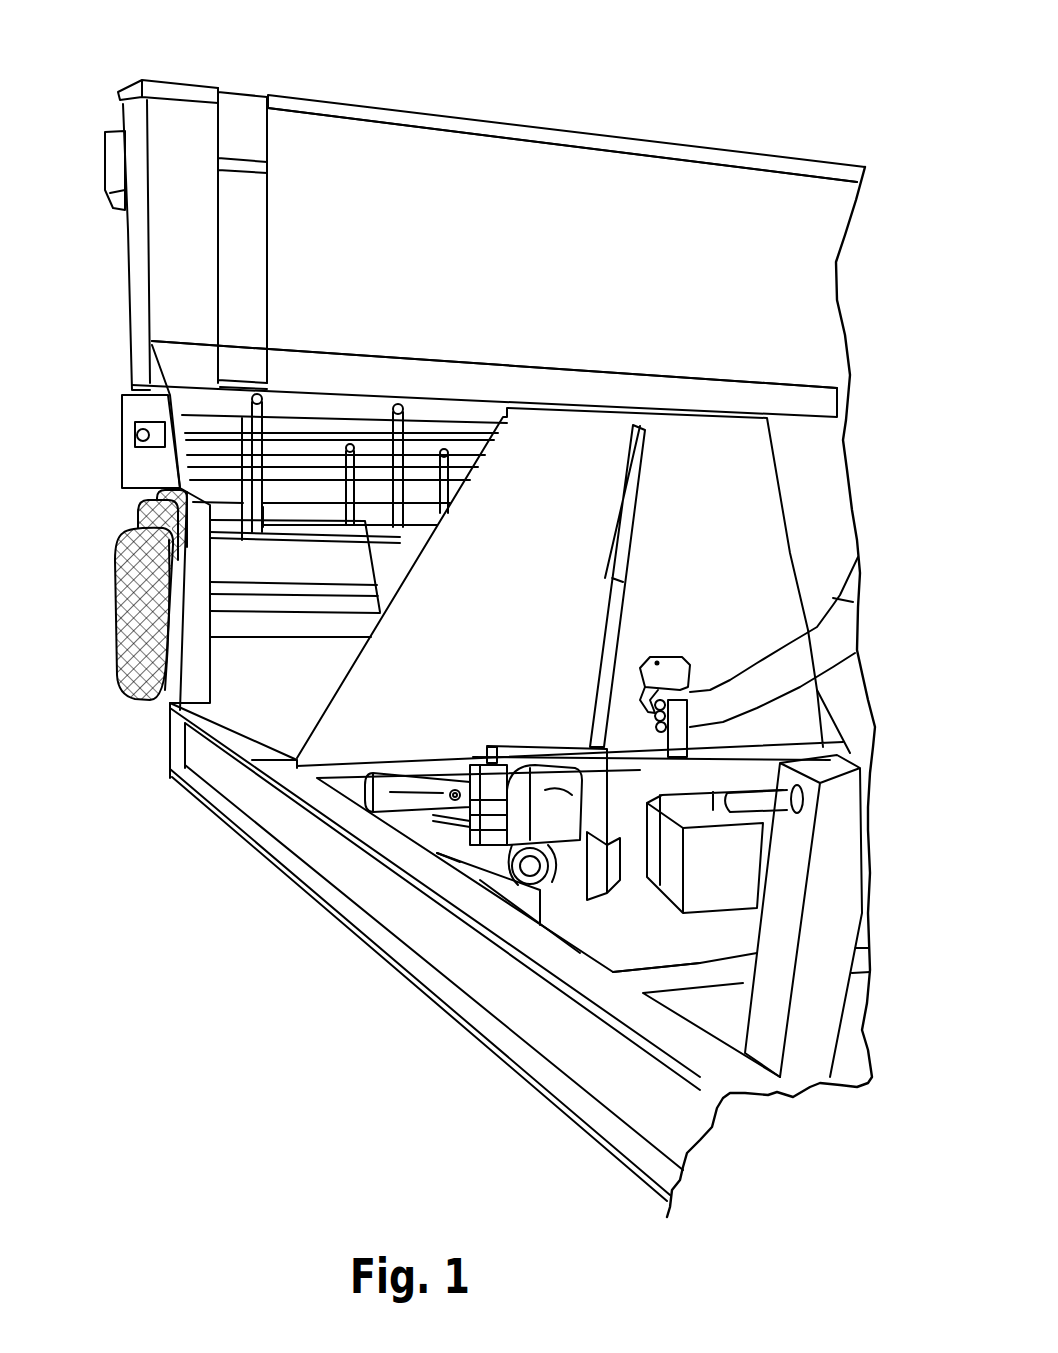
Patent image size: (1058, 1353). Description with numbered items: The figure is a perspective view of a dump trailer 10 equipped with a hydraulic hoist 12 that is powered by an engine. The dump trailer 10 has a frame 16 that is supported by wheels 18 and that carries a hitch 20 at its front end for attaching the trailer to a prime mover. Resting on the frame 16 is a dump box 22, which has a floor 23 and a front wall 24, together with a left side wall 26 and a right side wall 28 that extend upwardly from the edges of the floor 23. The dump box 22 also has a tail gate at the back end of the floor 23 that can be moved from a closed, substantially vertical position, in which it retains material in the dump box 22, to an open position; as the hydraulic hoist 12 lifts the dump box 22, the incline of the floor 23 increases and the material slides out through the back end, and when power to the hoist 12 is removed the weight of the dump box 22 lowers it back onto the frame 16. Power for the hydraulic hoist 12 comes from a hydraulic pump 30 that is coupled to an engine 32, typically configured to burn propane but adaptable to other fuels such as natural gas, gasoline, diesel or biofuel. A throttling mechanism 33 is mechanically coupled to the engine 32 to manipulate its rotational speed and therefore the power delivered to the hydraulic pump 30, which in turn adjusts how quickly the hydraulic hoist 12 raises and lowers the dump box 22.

The dump trailer 10 is at (275, 1050).
The hydraulic hoist 12 is at (387, 566).
The frame 16 is at (190, 700).
The wheels 18 is at (133, 603).
The hitch 20 is at (642, 1095).
The dump box 22 is at (565, 82).
The floor 23 is at (303, 407).
The front wall 24 is at (758, 223).
The left side wall 26 is at (805, 170).
The right side wall 28 is at (137, 127).
The hydraulic pump 30 is at (484, 856).
The engine 32 is at (553, 740).
The throttling mechanism 33 is at (690, 660).